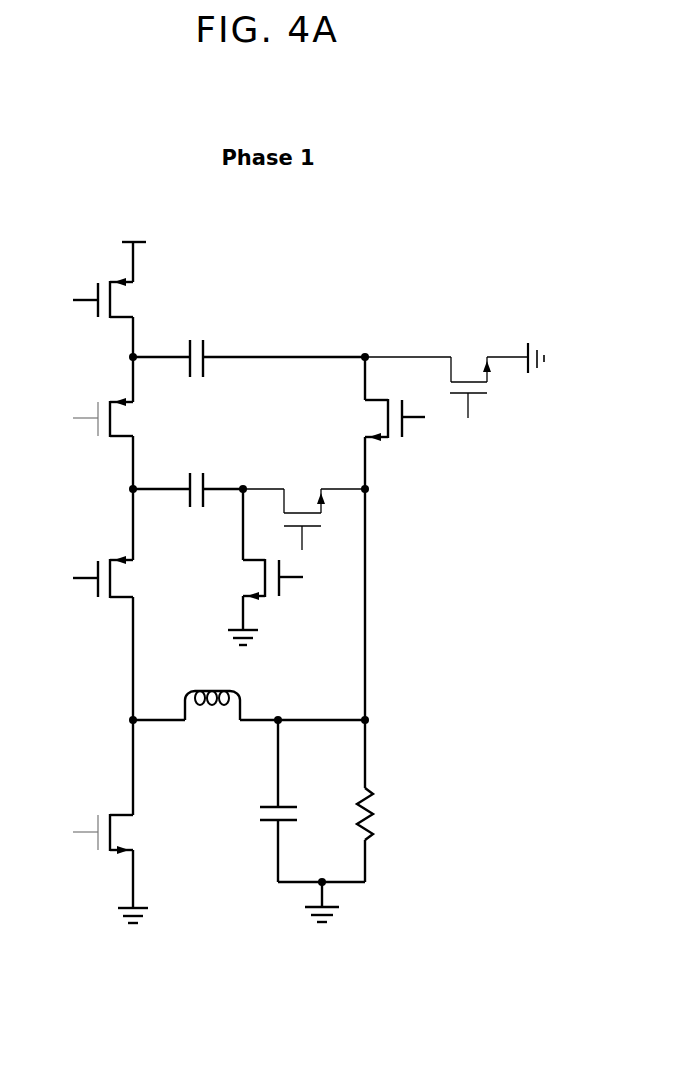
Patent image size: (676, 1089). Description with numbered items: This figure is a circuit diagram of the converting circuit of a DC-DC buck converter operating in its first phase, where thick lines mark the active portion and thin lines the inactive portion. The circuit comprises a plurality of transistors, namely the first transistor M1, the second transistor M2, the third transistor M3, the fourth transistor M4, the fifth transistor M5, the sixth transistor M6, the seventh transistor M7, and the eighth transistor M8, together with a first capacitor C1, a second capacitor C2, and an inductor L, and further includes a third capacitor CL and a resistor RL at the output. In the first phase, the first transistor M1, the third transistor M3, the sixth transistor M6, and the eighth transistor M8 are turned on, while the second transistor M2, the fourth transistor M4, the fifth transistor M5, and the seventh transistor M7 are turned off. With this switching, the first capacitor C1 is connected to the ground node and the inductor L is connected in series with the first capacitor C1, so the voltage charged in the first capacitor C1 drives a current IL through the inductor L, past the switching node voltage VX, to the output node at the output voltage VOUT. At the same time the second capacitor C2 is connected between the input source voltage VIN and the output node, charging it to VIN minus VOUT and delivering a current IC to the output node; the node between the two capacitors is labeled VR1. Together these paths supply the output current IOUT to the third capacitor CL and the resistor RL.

The first transistor M1 is at (117, 298).
The second transistor M2 is at (117, 417).
The third transistor M3 is at (117, 577).
The fourth transistor M4 is at (117, 834).
The fifth transistor M5 is at (470, 377).
The sixth transistor M6 is at (381, 420).
The seventh transistor M7 is at (304, 509).
The eighth transistor M8 is at (260, 579).
The first capacitor C1 is at (197, 504).
The second capacitor C2 is at (197, 374).
The third capacitor CL is at (292, 814).
The resistor RL is at (379, 814).
The inductor L is at (212, 693).
The input source voltage VIN is at (133, 225).
The first reference node voltage VR1 is at (158, 473).
The switching node voltage VX is at (108, 710).
The output voltage VOUT is at (327, 703).
The inductor current IL is at (238, 732).
The capacitor current IC is at (380, 650).
The output current IOUT is at (380, 728).